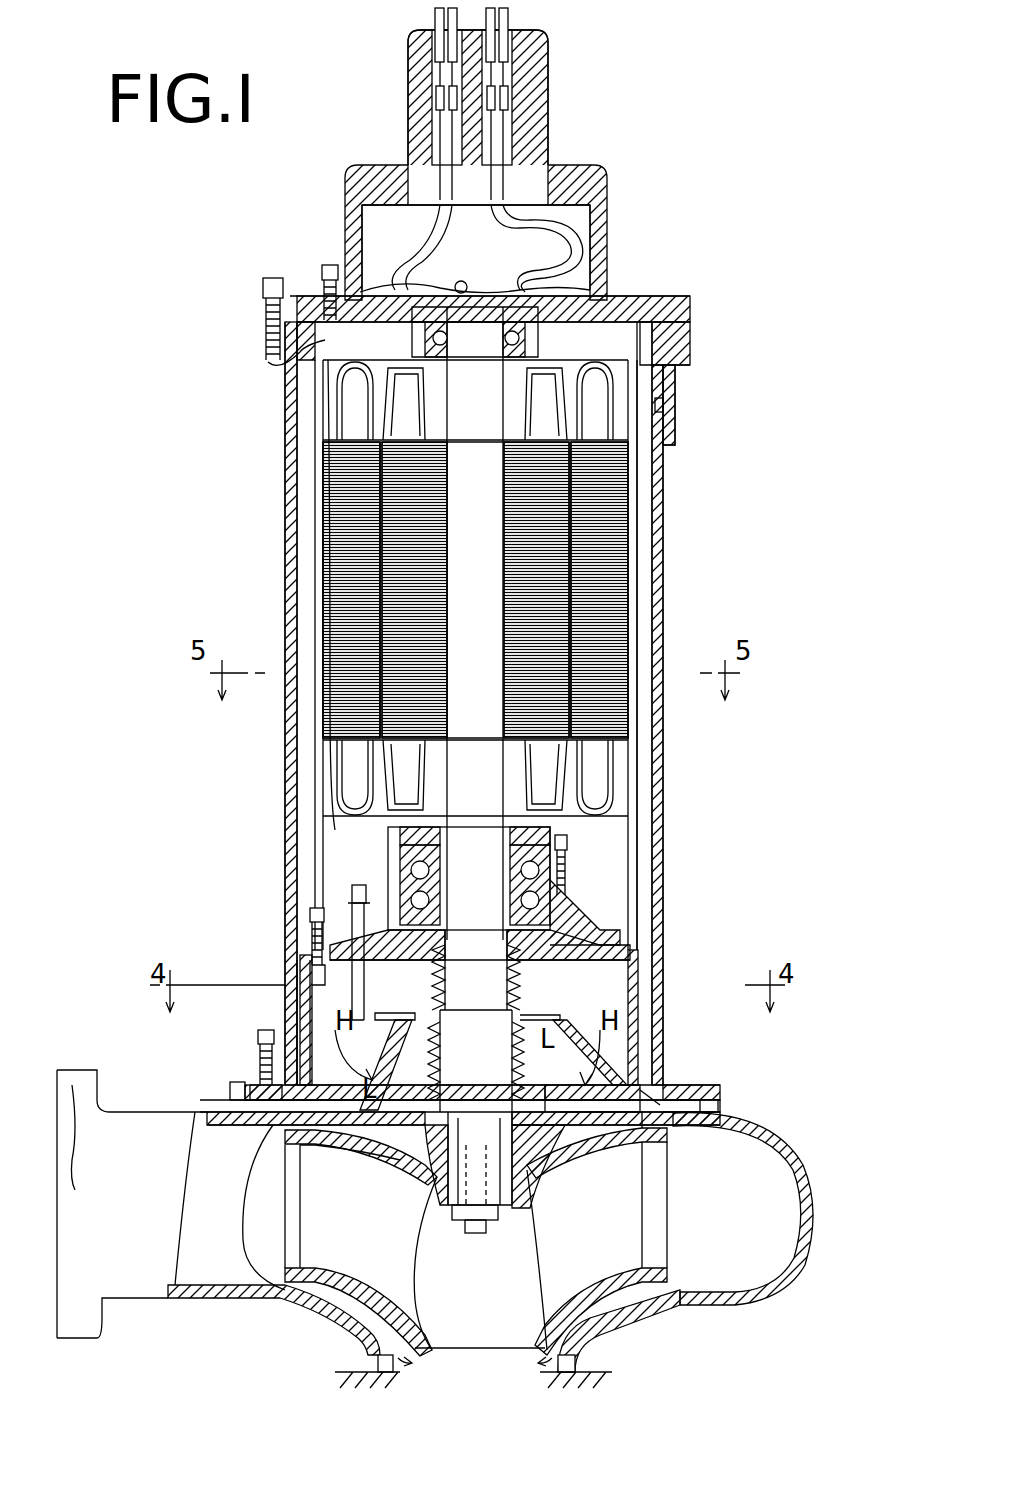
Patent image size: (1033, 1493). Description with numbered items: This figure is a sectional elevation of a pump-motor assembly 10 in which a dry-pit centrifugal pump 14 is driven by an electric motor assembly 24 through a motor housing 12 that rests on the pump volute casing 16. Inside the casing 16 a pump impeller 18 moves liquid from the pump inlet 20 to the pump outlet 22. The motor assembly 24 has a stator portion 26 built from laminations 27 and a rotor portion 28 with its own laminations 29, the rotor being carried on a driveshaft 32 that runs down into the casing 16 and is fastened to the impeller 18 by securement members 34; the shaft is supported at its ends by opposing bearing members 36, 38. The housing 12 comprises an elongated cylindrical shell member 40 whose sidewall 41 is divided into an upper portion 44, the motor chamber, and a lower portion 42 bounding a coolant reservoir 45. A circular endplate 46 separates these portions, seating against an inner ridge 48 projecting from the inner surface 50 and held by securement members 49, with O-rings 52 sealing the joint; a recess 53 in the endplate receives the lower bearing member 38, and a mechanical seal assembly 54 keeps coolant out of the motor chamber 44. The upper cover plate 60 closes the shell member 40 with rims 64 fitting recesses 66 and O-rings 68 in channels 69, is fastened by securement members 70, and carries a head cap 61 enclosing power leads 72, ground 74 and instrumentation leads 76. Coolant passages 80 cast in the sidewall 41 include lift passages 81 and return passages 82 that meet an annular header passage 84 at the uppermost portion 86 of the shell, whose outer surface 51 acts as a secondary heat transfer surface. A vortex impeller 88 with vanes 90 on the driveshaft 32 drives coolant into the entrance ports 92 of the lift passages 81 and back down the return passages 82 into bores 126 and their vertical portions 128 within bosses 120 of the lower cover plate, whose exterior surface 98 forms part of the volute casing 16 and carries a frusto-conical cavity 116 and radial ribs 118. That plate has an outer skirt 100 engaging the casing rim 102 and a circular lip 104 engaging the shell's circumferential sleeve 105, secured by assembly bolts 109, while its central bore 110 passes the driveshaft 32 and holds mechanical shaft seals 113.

The pump-motor assembly 10 is at (278, 439).
The motor housing 12 is at (672, 494).
The centrifugal pump 14 is at (775, 1125).
The pump volute casing 16 is at (790, 1165).
The pump impeller 18 is at (598, 1249).
The pump inlet 20 is at (388, 1356).
The pump outlet 22 is at (76, 1058).
The electric motor assembly 24 is at (615, 553).
The stator portion 26 is at (612, 718).
The laminations 27 is at (628, 745).
The rotor portion 28 is at (545, 400).
The laminations 29 is at (503, 495).
The driveshaft 32 is at (490, 654).
The securement members 34 is at (484, 1235).
The bearing member 36 is at (595, 275).
The bearing member 38 is at (560, 905).
The shell member 40 is at (662, 850).
The sidewall 41 is at (325, 713).
The lower portion 42 is at (290, 1010).
The upper portion 44 is at (336, 823).
The coolant reservoir 45 is at (612, 968).
The endplate 46 is at (608, 955).
The ridge 48 is at (620, 945).
The securement members 49 is at (320, 962).
The inner surface 50 is at (628, 808).
The outer surface 51 is at (660, 603).
The O-rings 52 is at (356, 905).
The recess 53 is at (528, 985).
The mechanical seal assembly 54 is at (545, 1015).
The cover plate 60 is at (328, 296).
The head cap 61 is at (537, 118).
The rims 64 is at (690, 350).
The recesses 66 is at (660, 328).
The O-rings 68 is at (672, 384).
The channels 69 is at (300, 342).
The securement members 70 is at (266, 282).
The power leads 72 is at (593, 205).
The ground 74 is at (445, 236).
The instrumentation leads 76 is at (475, 262).
The passages 80 is at (300, 520).
The lift passages 81 is at (312, 568).
The return passages 82 is at (645, 1020).
The header passage 84 is at (660, 407).
The uppermost portion 86 is at (290, 403).
The impeller 88 is at (430, 1000).
The vanes 90 is at (375, 1061).
The entrance ports 92 is at (325, 912).
The exterior surface 98 is at (272, 1133).
The skirt 100 is at (240, 1108).
The rim 102 is at (712, 1118).
The lip 104 is at (672, 1085).
The sleeve 105 is at (266, 1072).
The assembly bolts 109 is at (265, 1040).
The central bore 110 is at (590, 1050).
The mechanical shaft seals 113 is at (520, 1118).
The cavity 116 is at (420, 1112).
The radial ribs 118 is at (584, 1083).
The bosses 120 is at (580, 1118).
The bore 126 is at (680, 1090).
The vertical portion 128 is at (640, 1095).